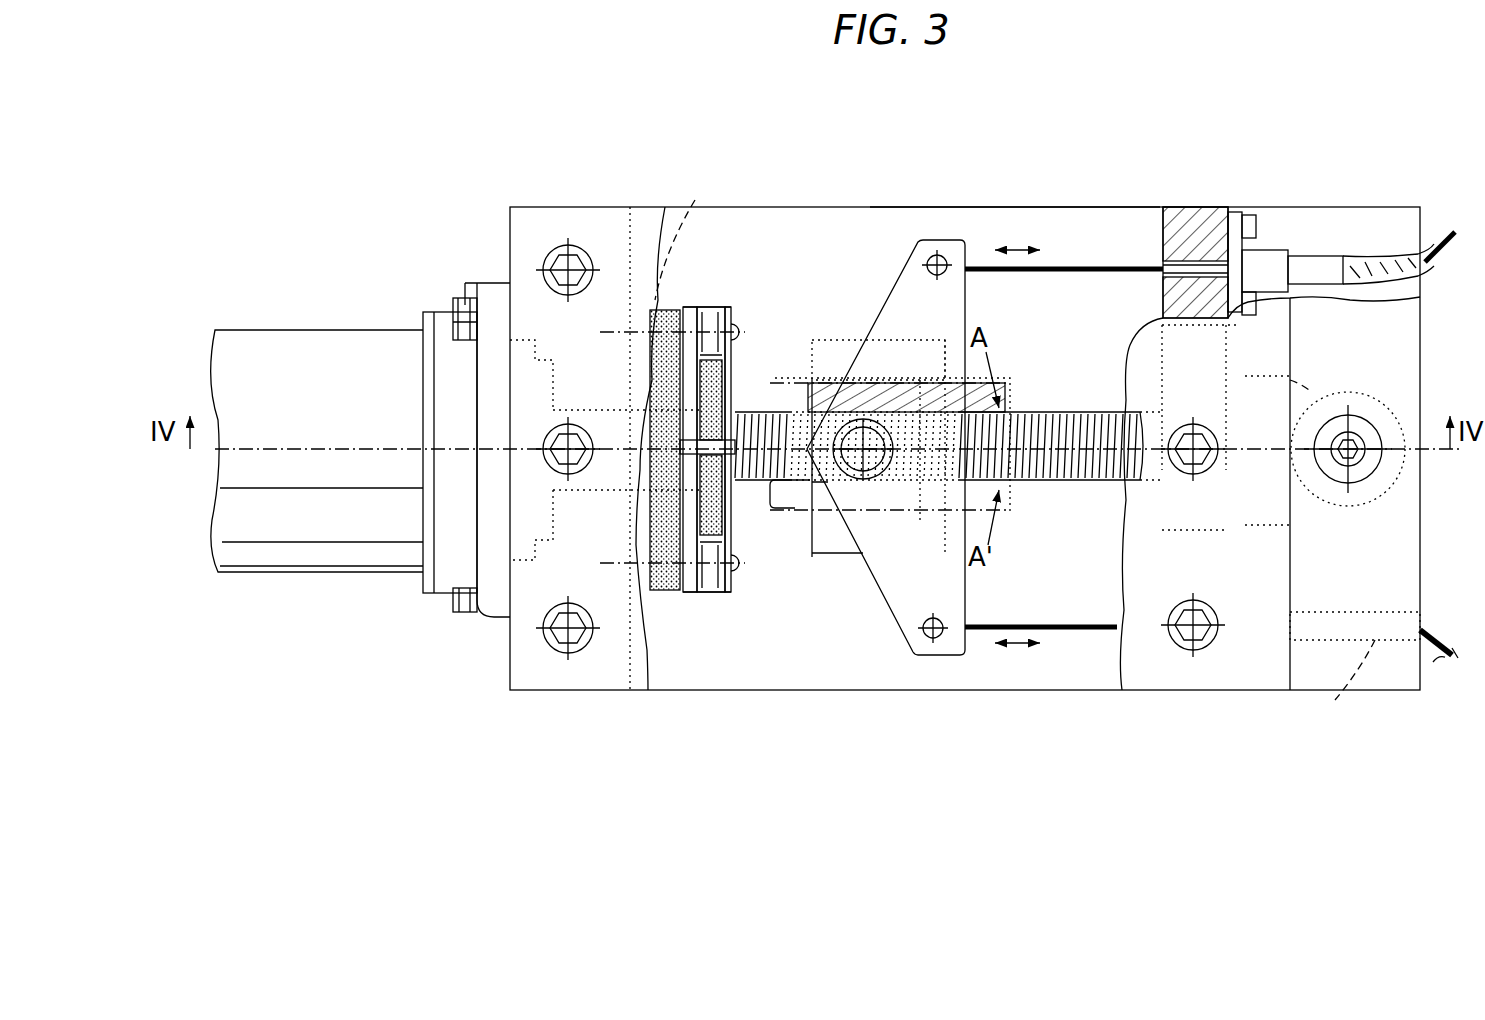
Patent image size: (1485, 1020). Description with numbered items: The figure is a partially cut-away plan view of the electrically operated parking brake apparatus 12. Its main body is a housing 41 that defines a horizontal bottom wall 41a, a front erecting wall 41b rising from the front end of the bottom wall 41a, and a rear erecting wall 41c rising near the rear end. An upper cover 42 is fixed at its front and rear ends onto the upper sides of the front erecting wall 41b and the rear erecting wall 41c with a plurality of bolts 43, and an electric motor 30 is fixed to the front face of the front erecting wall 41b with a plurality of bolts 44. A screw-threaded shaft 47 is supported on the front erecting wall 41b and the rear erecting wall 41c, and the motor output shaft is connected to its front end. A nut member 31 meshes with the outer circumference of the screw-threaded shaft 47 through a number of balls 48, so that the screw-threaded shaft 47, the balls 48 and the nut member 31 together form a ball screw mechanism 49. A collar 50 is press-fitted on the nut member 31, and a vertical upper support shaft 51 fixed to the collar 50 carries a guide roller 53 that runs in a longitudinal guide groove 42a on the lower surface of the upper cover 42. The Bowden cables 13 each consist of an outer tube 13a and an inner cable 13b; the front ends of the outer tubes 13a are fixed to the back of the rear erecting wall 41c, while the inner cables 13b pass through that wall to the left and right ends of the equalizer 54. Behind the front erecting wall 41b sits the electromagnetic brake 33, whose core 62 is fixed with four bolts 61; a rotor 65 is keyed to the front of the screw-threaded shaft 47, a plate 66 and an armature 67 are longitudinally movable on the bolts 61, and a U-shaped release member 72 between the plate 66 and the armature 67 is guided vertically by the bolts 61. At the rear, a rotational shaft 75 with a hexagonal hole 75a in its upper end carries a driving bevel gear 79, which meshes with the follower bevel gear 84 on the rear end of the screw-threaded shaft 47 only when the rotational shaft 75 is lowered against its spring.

The electrically operated parking brake apparatus 12 is at (1060, 195).
The Bowden cable 13 is at (1445, 140).
The outer tube 13a is at (1355, 222).
The inner cable 13b is at (1440, 222).
The electric motor 30 is at (333, 429).
The nut member 31 is at (793, 508).
The electromagnetic brake 33 is at (738, 280).
The housing 41 is at (837, 205).
The bottom wall 41a is at (887, 215).
The front erecting wall 41b is at (688, 234).
The rear erecting wall 41c is at (1192, 215).
The upper cover 42 is at (538, 205).
The guide groove 42a is at (892, 410).
The bolts 43 is at (578, 262).
The bolts 44 is at (460, 300).
The screw-threaded shaft 47 is at (1058, 485).
The balls 48 is at (938, 538).
The ball screw mechanism 49 is at (823, 557).
The collar 50 is at (835, 553).
The upper support shaft 51 is at (868, 418).
The guide roller 53 is at (867, 482).
The equalizer 54 is at (890, 322).
The bolts 61 is at (725, 335).
The core 62 is at (655, 340).
The rotor 65 is at (720, 375).
The plate 66 is at (730, 590).
The armature 67 is at (690, 592).
The release member 72 is at (712, 592).
The rotational shaft 75 is at (1357, 480).
The hexagonal hole 75a is at (1350, 430).
The driving bevel gear 79 is at (1322, 392).
The follower bevel gear 84 is at (1300, 512).